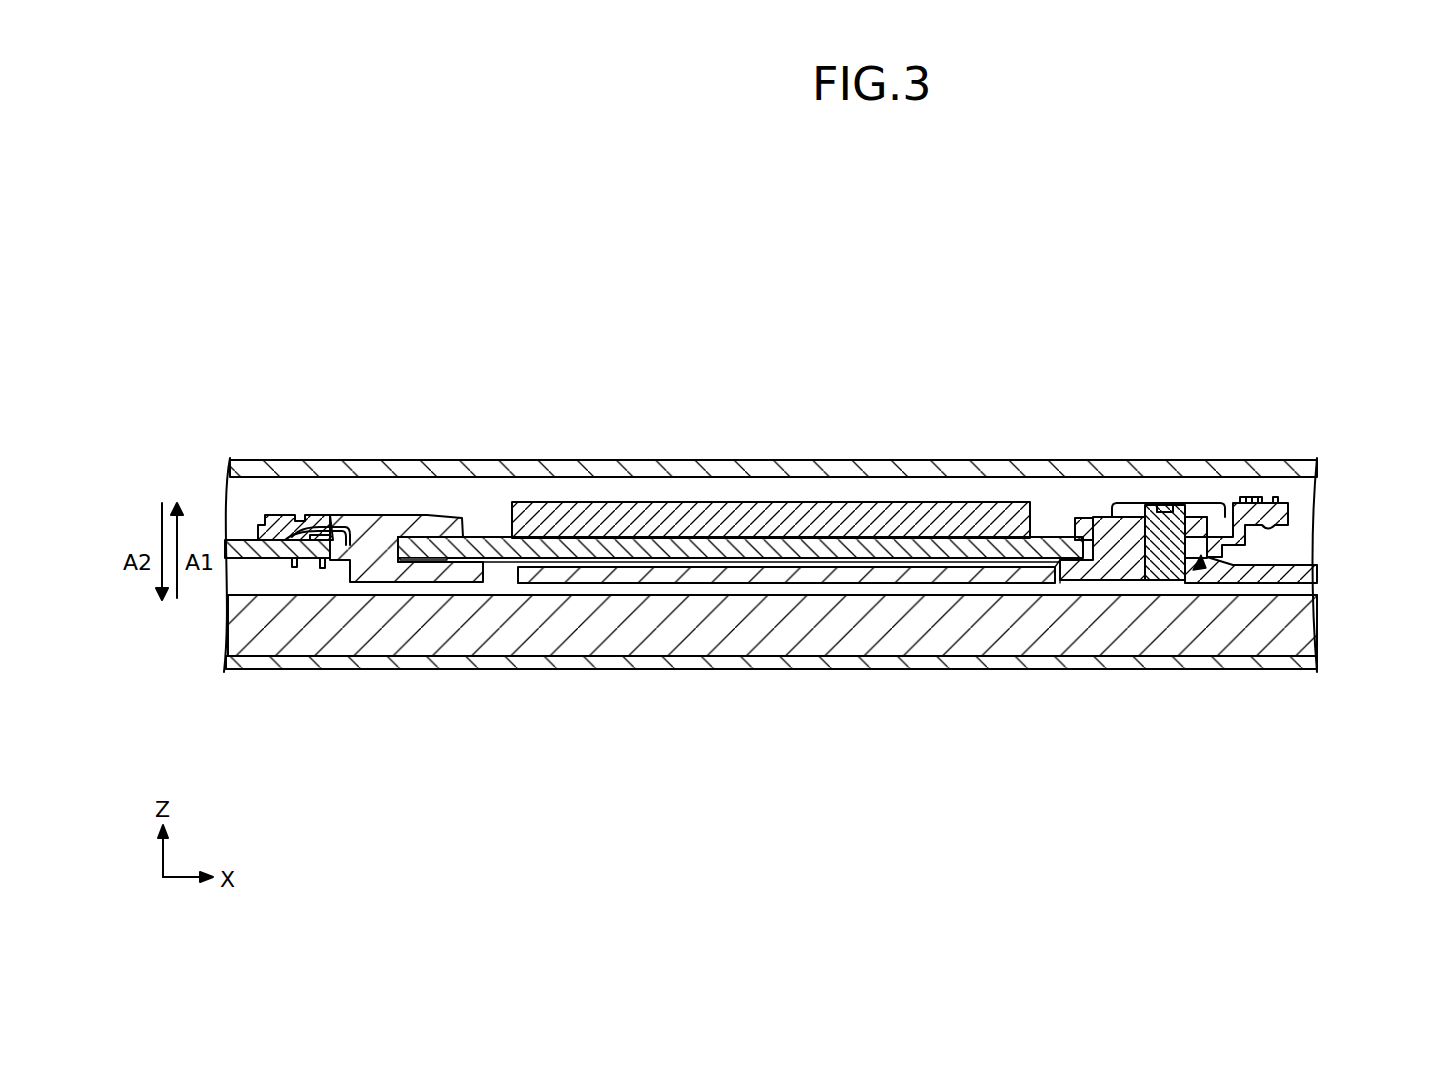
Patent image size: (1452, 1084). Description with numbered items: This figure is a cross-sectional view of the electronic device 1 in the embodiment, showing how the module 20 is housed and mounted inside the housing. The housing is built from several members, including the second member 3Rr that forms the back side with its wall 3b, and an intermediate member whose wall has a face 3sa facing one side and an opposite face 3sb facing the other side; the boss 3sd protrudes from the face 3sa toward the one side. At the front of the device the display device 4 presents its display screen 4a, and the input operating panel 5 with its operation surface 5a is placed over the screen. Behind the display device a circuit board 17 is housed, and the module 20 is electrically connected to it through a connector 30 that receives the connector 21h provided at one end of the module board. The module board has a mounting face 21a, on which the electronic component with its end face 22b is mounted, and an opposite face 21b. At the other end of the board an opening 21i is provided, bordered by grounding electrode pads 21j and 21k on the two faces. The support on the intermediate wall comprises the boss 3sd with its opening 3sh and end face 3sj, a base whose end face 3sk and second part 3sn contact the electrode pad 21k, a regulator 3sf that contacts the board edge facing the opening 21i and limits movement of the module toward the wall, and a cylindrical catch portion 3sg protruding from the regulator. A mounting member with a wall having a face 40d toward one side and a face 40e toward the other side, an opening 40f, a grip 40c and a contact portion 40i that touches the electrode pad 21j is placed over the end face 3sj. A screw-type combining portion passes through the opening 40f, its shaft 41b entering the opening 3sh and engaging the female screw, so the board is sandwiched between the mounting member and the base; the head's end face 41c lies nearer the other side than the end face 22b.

The imaging apparatus 1 is at (256, 226).
The upper wall of case 3b is at (263, 458).
The second member 3Rr is at (242, 458).
The circuit board 17 is at (232, 530).
The connector 30 is at (365, 512).
The connector 21h is at (380, 525).
The face 21a is at (478, 535).
The module 20 is at (612, 492).
The end face 22b is at (669, 503).
The face 3sa is at (568, 560).
The face 3sb is at (548, 583).
The input operating panel 5 is at (258, 663).
The operation surface 5a is at (330, 670).
The display device 4 is at (386, 643).
The display screen 4a is at (434, 657).
The face 21b is at (700, 567).
The opening 21i is at (1057, 562).
The electrode pad 21k is at (1078, 560).
The electrode pad 21j is at (1080, 518).
The second part 3sn is at (1083, 540).
The contact portion 40i is at (1105, 518).
The catch portion 3sg is at (1130, 517).
The end face 3sk is at (1133, 503).
The opening 40f is at (1165, 503).
The end face 41c is at (1178, 512).
The face 40d is at (1190, 503).
The end face 3sj is at (1203, 512).
The grip 40c is at (1290, 508).
The face 40e is at (1138, 580).
The shaft 41b is at (1168, 580).
The regulator 3sf is at (1106, 580).
The opening 3sh is at (1188, 583).
The boss 3sd is at (1200, 578).